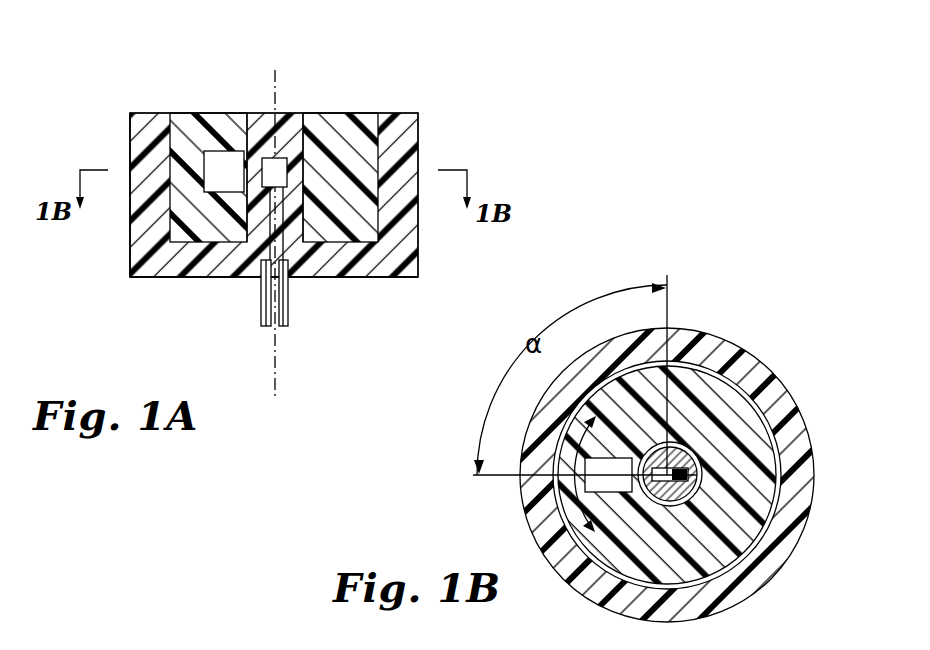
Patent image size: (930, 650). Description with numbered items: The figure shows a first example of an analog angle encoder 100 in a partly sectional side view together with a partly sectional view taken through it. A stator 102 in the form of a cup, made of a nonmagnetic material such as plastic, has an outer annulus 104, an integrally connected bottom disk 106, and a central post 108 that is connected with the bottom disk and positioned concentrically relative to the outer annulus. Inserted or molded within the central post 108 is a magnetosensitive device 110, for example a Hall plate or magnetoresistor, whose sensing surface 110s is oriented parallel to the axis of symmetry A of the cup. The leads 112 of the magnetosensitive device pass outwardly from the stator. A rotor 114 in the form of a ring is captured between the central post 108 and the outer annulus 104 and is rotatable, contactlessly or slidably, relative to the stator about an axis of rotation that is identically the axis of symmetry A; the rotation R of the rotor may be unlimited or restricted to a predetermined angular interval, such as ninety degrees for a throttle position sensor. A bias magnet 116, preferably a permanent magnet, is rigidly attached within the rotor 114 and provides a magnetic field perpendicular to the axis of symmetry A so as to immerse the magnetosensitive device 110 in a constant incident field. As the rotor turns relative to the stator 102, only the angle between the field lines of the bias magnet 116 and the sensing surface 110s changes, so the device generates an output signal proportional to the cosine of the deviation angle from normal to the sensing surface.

In FIG. 1A, the analog angle encoder 100 is at (434, 97).
In FIG. 1A, the stator 102 is at (426, 250).
In FIG. 1B, the stator 102 is at (688, 320).
In FIG. 1A, the outer annulus 104 is at (130, 232).
In FIG. 1A, the bottom disk 106 is at (199, 278).
In FIG. 1A, the central post 108 is at (296, 150).
In FIG. 1A, the magnetosensitive device 110 is at (281, 157).
In FIG. 1B, the magnetosensitive device 110 is at (660, 502).
In FIG. 1B, the sensing surface 110s is at (692, 447).
In FIG. 1A, the leads 112 is at (288, 303).
In FIG. 1A, the rotor 114 is at (188, 104).
In FIG. 1B, the rotor 114 is at (710, 588).
In FIG. 1A, the bias magnet 116 is at (203, 167).
In FIG. 1B, the bias magnet 116 is at (590, 516).
In FIG. 1A, the axis of symmetry A is at (272, 100).
In FIG. 1B, the rotation R is at (555, 478).